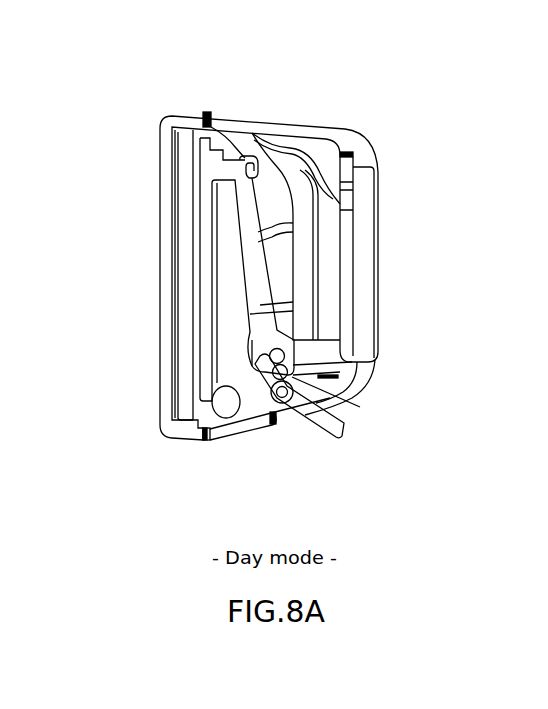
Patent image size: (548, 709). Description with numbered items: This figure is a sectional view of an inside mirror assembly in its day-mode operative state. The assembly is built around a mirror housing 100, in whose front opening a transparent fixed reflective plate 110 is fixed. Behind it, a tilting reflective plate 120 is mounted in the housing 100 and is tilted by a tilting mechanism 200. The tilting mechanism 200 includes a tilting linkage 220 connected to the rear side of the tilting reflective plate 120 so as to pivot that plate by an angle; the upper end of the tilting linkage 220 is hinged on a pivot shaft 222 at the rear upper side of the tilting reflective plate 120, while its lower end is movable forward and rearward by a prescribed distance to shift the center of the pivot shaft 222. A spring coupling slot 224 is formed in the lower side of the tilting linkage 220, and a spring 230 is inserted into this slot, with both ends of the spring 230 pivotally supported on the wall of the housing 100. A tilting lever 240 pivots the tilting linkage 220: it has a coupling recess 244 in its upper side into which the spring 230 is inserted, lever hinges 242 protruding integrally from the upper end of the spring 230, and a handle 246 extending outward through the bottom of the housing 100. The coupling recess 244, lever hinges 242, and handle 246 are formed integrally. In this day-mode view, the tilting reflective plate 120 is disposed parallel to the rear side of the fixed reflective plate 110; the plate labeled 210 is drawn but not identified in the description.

The mirror housing 100 is at (288, 120).
The transparent fixed reflective plate 110 is at (160, 193).
The tilting reflective plate 120 is at (180, 240).
The tilting mechanism 200 is at (290, 435).
The support plate 210 is at (203, 272).
The tilting linkage 220 is at (253, 288).
The pivot shaft 222 is at (207, 112).
The spring coupling slot 224 is at (352, 365).
The spring 230 is at (255, 358).
The tilting lever 240 is at (342, 428).
The lever hinges 242 is at (258, 437).
The coupling recess 244 is at (330, 408).
The handle 246 is at (333, 440).